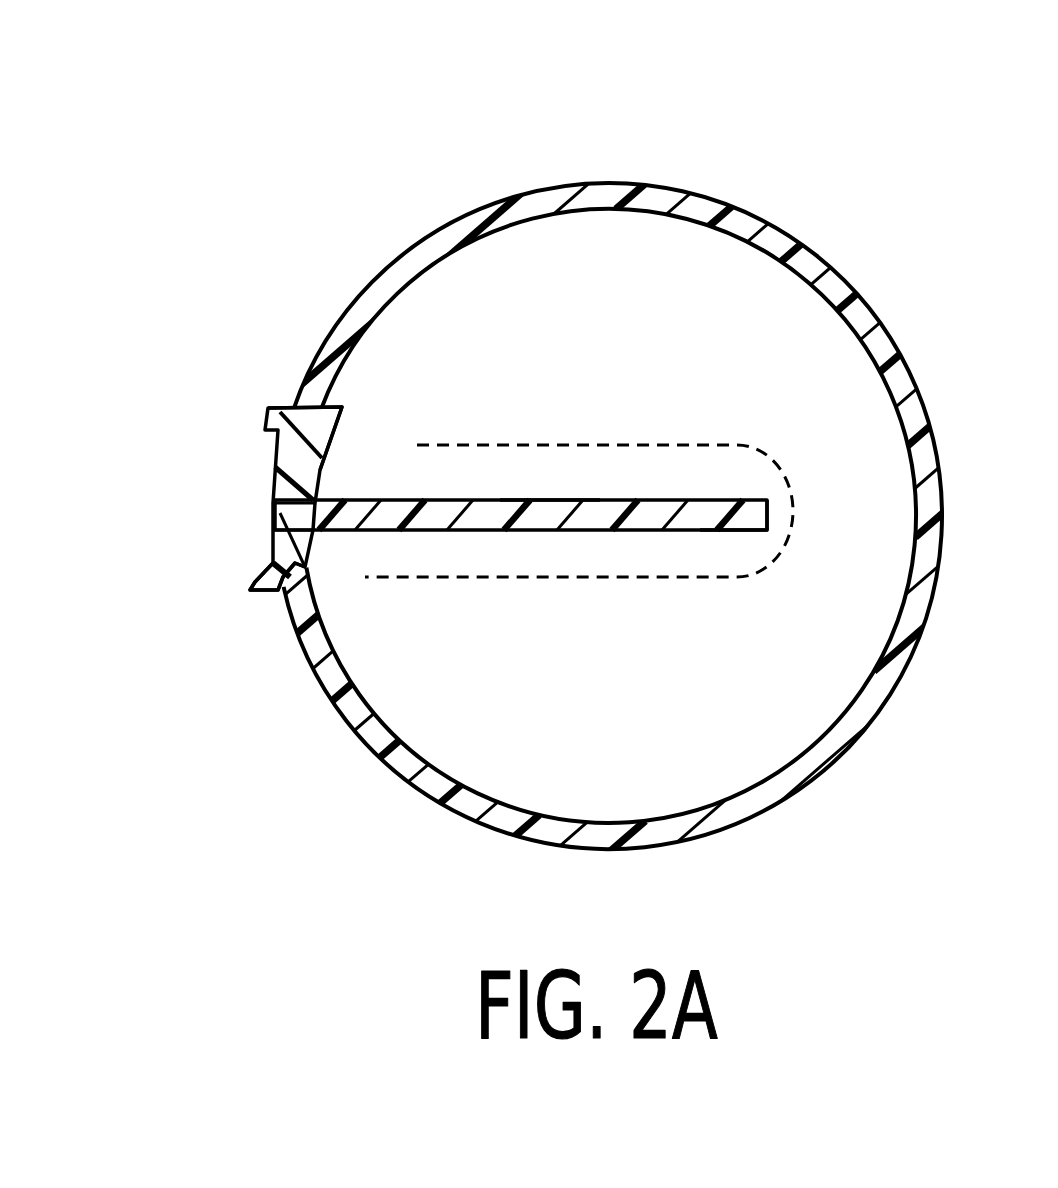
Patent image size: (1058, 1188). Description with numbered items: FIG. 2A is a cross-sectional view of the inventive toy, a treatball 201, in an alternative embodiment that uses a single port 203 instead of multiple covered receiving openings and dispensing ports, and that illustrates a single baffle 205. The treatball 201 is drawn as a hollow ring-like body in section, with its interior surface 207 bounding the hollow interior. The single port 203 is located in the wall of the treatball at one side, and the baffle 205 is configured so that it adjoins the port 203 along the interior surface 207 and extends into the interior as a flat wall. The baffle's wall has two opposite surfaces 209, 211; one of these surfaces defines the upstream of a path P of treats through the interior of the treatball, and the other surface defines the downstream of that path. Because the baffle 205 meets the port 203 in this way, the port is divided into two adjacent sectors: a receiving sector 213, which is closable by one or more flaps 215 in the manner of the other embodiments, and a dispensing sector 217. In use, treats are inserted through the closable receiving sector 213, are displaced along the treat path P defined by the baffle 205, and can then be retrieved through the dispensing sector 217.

The medical device / implant assembly 201 is at (609, 436).
The connector 203 is at (247, 486).
The baffle 205 is at (531, 508).
The ring body wall 207 is at (343, 670).
The baffle wall surface 209 is at (550, 500).
The baffle wall surface 211 is at (742, 533).
The receiving sector 213 is at (337, 453).
The flap 215 is at (313, 421).
The dispensing sector 217 is at (242, 566).
The path of treats P is at (615, 428).